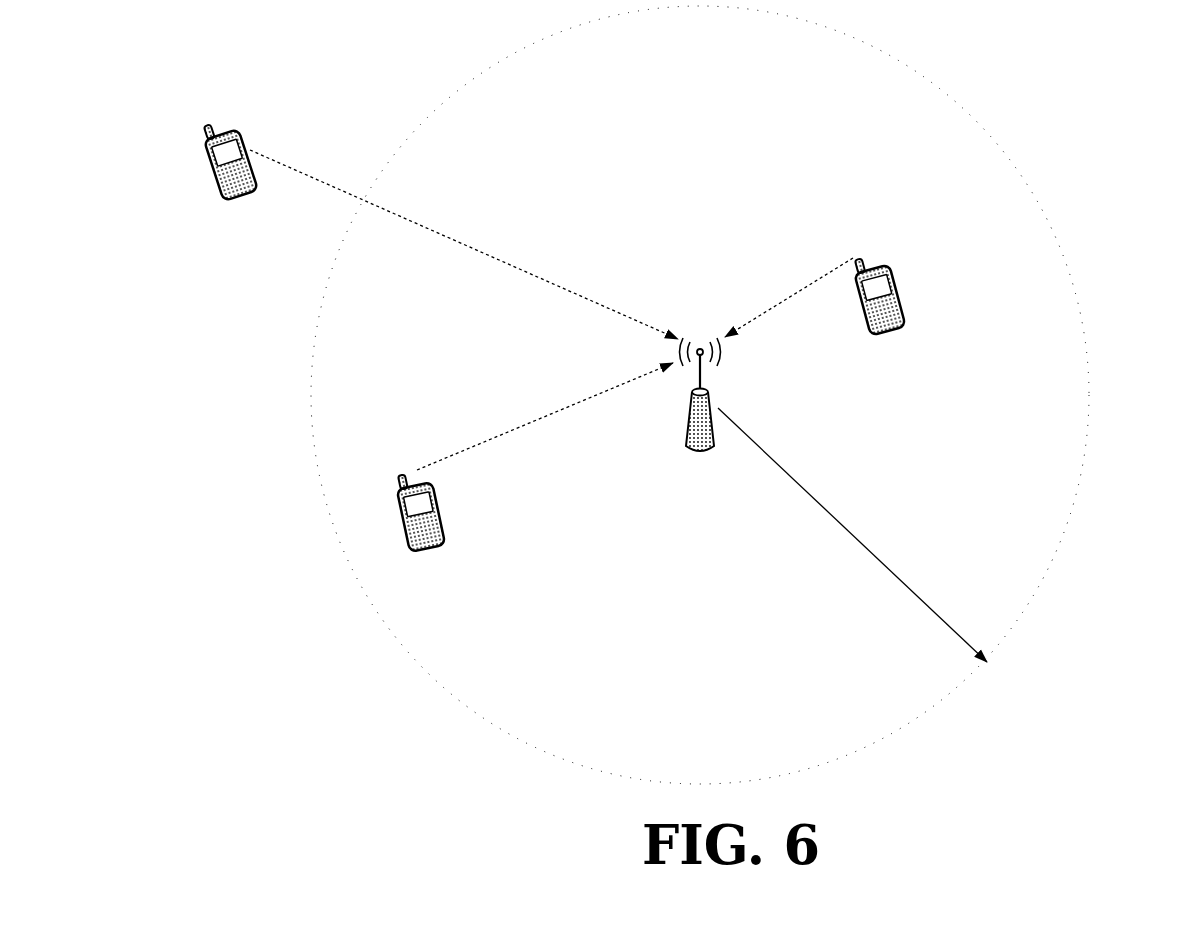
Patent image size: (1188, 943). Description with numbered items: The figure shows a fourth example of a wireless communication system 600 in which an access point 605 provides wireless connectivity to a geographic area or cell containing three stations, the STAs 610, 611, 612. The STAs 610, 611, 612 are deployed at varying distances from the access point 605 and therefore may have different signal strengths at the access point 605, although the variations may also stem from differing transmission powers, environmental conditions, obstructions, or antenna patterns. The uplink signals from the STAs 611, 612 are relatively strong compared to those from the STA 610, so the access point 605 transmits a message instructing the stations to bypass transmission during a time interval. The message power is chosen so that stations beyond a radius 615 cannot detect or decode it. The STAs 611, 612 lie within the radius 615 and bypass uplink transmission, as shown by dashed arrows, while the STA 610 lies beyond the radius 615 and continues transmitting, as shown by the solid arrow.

The wireless communication system 600 is at (1062, 60).
The access point 605 is at (703, 457).
The STA 610 is at (240, 201).
The STA 611 is at (419, 553).
The STA 612 is at (882, 335).
The radius 615 is at (870, 553).